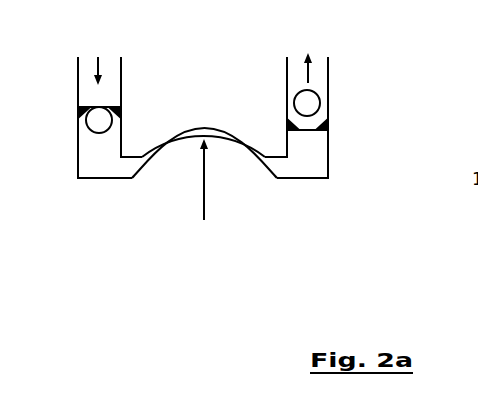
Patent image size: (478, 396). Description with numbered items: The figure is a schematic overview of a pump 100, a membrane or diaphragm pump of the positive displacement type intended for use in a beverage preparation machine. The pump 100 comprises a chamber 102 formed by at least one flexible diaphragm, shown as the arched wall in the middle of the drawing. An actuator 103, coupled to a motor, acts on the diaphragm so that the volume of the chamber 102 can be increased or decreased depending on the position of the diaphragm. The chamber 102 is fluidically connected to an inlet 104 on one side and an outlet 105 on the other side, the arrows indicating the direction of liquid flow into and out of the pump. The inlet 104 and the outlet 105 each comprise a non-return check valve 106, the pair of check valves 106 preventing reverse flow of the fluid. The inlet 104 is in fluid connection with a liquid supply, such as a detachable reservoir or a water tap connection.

The pump 100 is at (347, 113).
The chamber 102 is at (196, 128).
The actuator 103 is at (204, 190).
The inlet 104 is at (108, 61).
The outlet 105 is at (324, 60).
The non-return check valve 106 is at (101, 118).